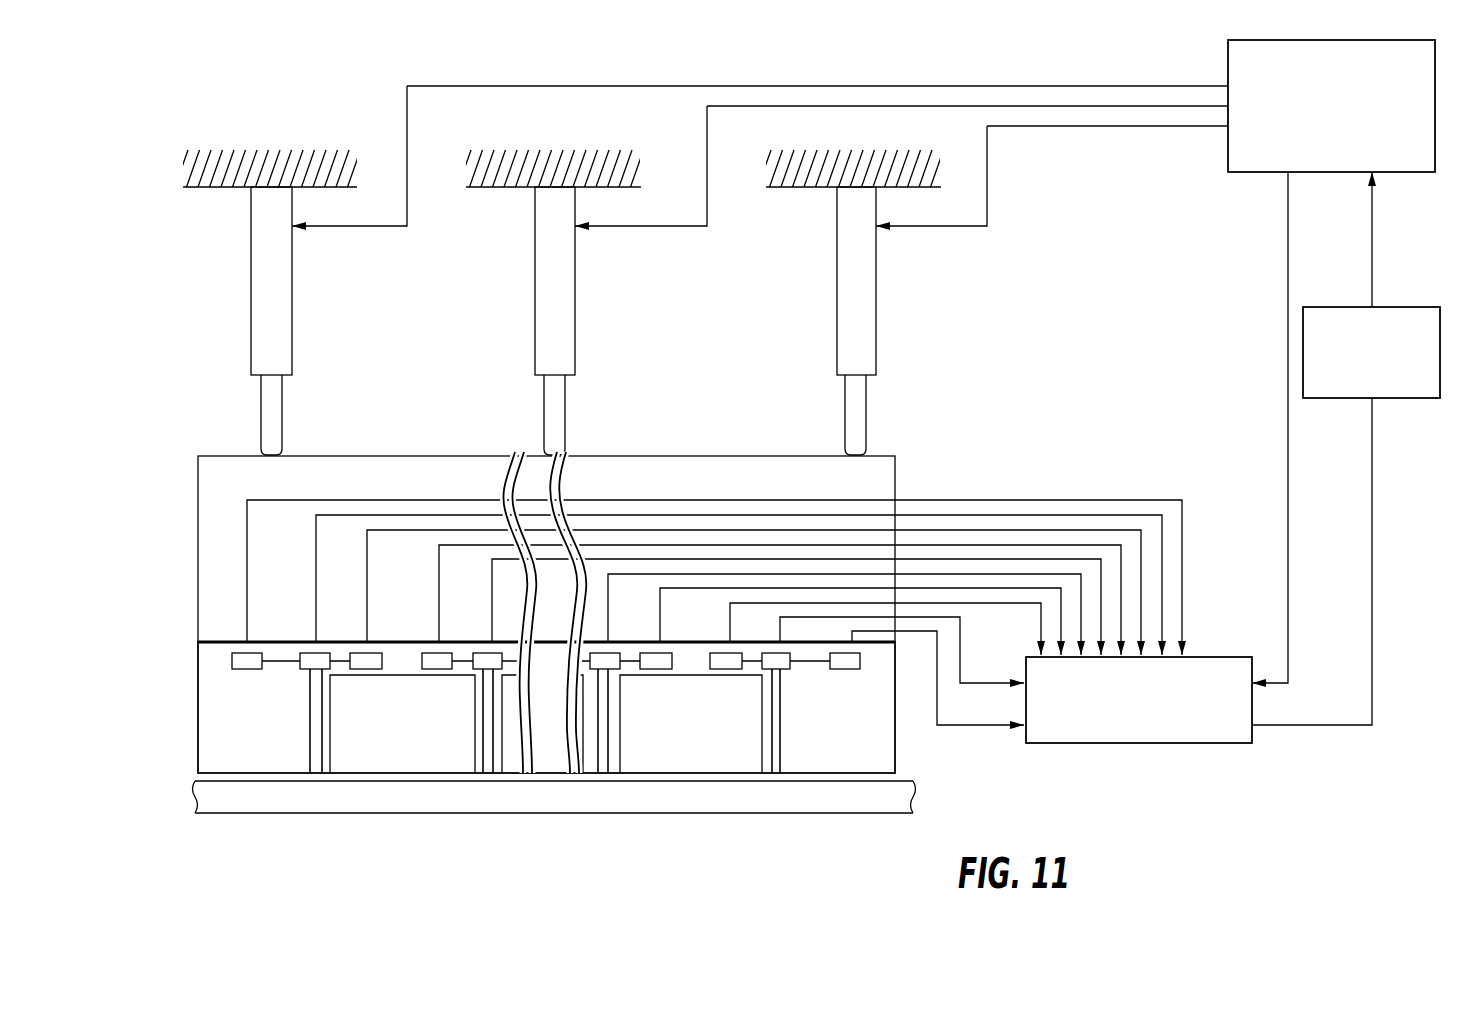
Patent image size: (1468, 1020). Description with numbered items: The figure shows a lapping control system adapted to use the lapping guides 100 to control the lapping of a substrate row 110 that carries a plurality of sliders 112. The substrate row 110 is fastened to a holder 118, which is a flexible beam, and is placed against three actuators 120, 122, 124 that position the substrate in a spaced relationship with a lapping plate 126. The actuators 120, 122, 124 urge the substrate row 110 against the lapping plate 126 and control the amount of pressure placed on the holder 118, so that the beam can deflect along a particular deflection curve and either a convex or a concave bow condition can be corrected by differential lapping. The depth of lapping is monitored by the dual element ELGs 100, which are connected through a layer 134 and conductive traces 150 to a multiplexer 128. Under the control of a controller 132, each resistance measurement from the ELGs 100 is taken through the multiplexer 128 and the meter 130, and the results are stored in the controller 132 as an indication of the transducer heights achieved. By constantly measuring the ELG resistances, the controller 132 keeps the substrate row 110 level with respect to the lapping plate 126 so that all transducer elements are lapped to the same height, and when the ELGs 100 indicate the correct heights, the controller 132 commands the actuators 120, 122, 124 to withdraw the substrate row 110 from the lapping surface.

The lapping guide 100 is at (483, 740).
The substrate row 110 is at (198, 712).
The slider 112 is at (477, 776).
The holder 118 is at (204, 537).
The actuator 120 is at (293, 317).
The actuator 122 is at (576, 317).
The actuator 124 is at (877, 317).
The lapping plate 126 is at (325, 808).
The multiplexer 128 is at (1222, 745).
The meter 130 is at (1432, 400).
The controller 132 is at (1428, 174).
The conductive layer 134 is at (212, 641).
The conductive traces 150 is at (366, 596).